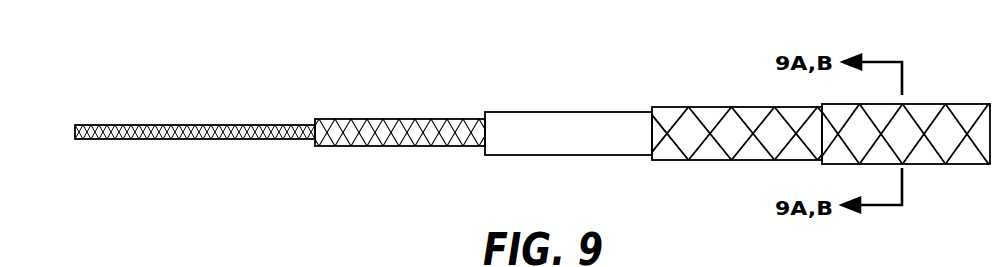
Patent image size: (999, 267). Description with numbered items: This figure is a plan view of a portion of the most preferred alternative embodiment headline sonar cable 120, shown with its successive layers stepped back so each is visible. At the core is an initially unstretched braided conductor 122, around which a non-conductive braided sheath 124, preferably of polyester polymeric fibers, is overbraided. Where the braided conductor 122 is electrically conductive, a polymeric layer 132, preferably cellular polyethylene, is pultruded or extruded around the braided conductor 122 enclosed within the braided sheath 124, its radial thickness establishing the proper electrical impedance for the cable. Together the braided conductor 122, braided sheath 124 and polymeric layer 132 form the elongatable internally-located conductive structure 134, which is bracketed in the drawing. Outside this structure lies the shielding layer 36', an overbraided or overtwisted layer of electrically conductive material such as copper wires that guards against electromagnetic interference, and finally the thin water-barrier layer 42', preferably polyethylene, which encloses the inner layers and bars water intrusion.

The headline sonar cable 120 is at (533, 134).
The braided conductor 122 is at (174, 125).
The braided sheath 124 is at (395, 119).
The polymeric layer 132 is at (568, 117).
The elongatable internally-located conductive structure 134 is at (359, 91).
The shielding layer 36' is at (732, 116).
The water-barrier layer 42' is at (887, 117).